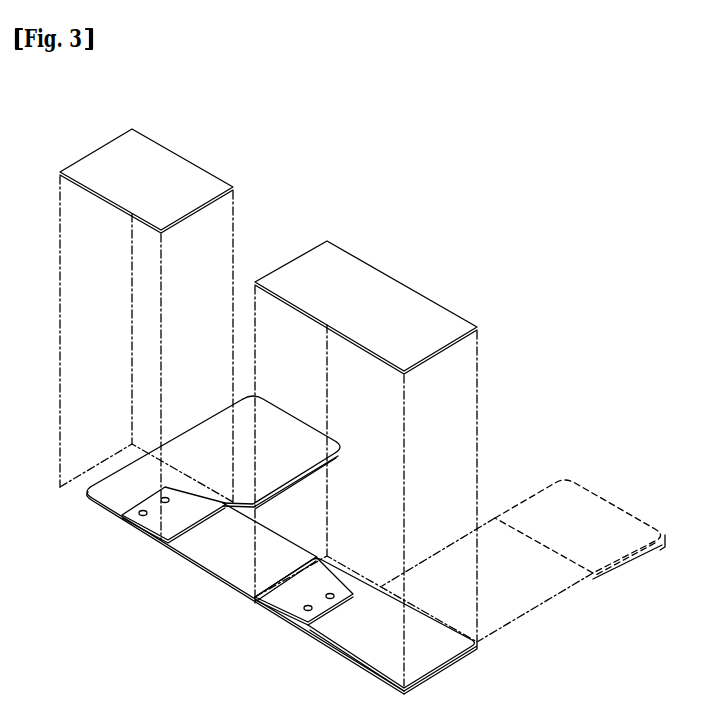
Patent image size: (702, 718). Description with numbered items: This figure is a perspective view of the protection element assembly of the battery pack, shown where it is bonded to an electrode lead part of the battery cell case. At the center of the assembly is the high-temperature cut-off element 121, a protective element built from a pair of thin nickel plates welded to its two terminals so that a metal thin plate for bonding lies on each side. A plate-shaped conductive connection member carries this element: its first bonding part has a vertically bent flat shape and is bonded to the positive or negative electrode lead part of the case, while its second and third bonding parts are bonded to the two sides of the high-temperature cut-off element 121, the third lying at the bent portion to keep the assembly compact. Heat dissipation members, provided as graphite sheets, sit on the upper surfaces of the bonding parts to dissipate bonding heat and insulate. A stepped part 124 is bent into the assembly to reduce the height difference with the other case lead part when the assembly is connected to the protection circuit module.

The high-temperature cut-off element 121 is at (208, 557).
The stepped part 124 is at (328, 447).